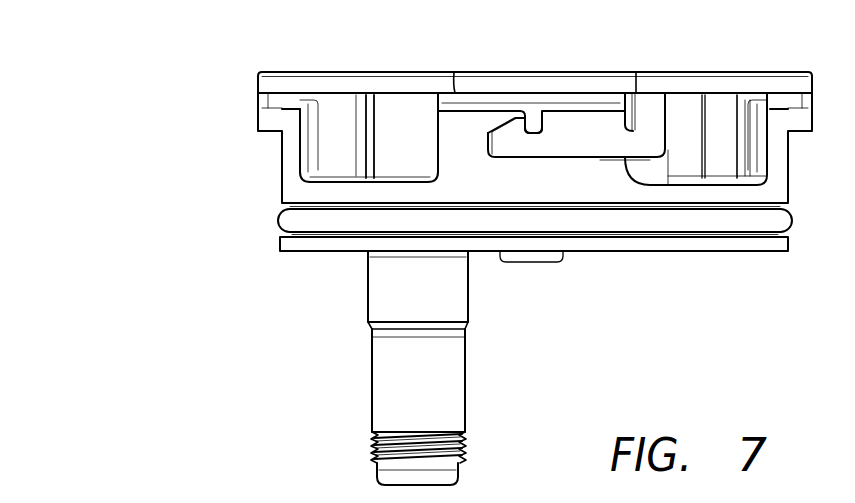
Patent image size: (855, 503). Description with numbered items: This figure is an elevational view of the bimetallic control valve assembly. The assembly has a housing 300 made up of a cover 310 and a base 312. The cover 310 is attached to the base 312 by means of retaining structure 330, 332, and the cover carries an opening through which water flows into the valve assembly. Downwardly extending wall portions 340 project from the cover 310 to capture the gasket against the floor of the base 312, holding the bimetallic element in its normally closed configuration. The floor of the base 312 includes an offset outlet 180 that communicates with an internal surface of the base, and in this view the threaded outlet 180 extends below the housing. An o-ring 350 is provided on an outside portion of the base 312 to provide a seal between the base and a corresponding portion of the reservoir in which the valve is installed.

The housing 300 is at (128, 112).
The cover 310 is at (256, 85).
The base 312 is at (280, 156).
The retaining structure 330 is at (497, 157).
The retaining structure 332 is at (547, 120).
The downwardly extending wall portions 340 is at (339, 168).
The o-ring seal 350 is at (275, 219).
The offset outlet 180 is at (372, 385).